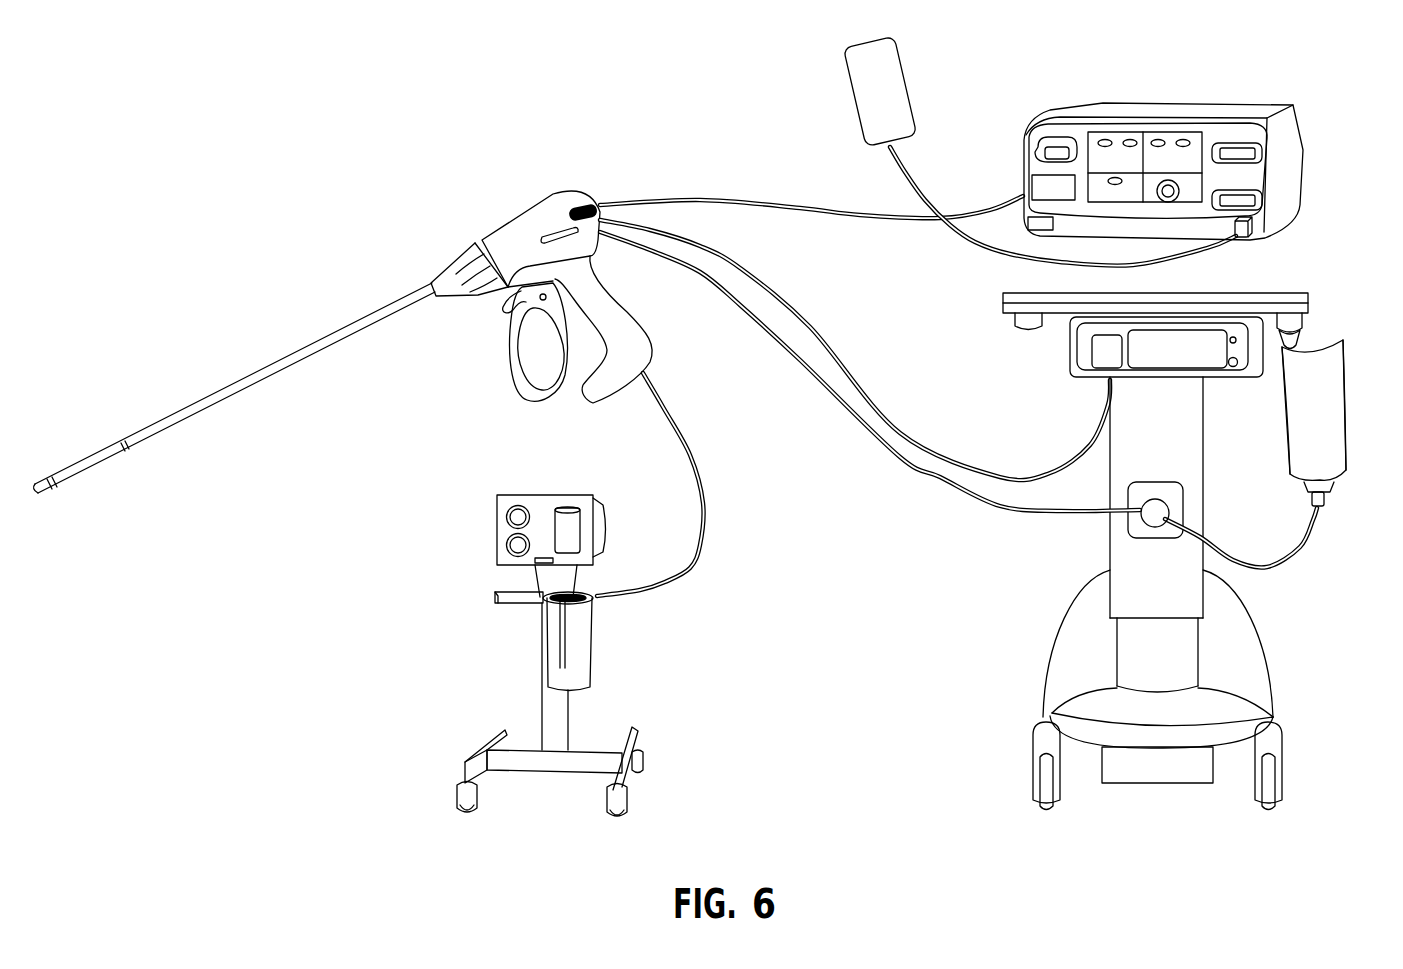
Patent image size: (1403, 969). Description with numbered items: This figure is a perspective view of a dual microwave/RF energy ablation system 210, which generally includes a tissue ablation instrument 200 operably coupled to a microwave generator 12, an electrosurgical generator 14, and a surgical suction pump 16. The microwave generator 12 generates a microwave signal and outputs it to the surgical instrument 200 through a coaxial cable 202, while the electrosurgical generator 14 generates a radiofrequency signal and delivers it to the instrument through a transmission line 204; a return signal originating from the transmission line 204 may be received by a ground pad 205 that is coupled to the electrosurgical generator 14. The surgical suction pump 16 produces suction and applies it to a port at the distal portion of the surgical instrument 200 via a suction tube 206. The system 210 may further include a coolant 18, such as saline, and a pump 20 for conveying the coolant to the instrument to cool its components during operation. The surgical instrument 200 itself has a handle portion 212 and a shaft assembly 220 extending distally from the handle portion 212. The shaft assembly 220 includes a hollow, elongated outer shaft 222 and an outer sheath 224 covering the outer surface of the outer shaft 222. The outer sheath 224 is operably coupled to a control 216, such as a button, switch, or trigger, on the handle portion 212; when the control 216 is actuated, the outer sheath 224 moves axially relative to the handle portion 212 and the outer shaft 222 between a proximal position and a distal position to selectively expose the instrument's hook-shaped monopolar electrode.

The dual microwave/RF energy ablation system 210 is at (690, 118).
The tissue ablation instrument 200 is at (308, 284).
The handle portion 212 is at (549, 195).
The control 216 is at (502, 303).
The shaft assembly 220 is at (335, 352).
The outer sheath 224 is at (247, 374).
The outer shaft 222 is at (48, 497).
The transmission line 204 is at (742, 196).
The coaxial cable 202 is at (812, 327).
The ground pad 205 is at (897, 86).
The electrosurgical generator 14 is at (1193, 103).
The microwave generator 12 is at (1244, 347).
The pump 20 is at (1157, 520).
The coolant 18 is at (1325, 432).
The suction tube 206 is at (655, 380).
The surgical suction pump 16 is at (535, 503).